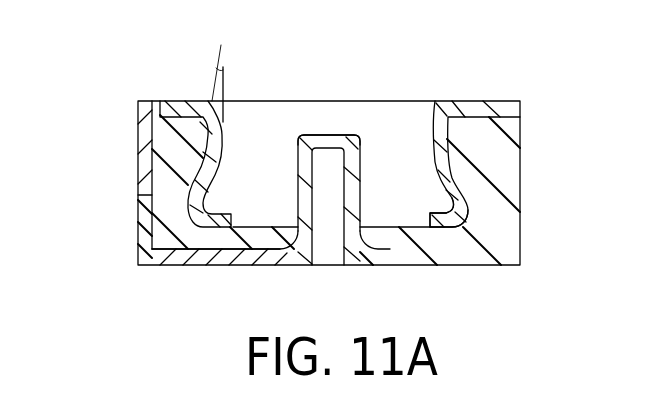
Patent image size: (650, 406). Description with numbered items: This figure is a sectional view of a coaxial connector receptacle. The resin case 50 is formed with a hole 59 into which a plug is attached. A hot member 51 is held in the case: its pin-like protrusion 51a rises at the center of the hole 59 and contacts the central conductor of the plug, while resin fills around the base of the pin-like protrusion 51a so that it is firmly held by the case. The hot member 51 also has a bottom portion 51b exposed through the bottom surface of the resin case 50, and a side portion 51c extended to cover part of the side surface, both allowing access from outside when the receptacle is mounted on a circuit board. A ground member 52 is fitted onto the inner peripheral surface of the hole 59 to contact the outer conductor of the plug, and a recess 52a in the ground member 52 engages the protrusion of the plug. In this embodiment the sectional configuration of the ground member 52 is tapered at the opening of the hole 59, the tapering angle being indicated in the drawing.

The resin case 50 is at (515, 214).
The hot member 51 is at (354, 122).
The pin-like protrusion 51a is at (388, 146).
The bottom portion 51b is at (218, 266).
The side portion 51c is at (137, 226).
The ground member 52 is at (480, 101).
The recess 52a is at (453, 199).
The hole 59 is at (281, 113).